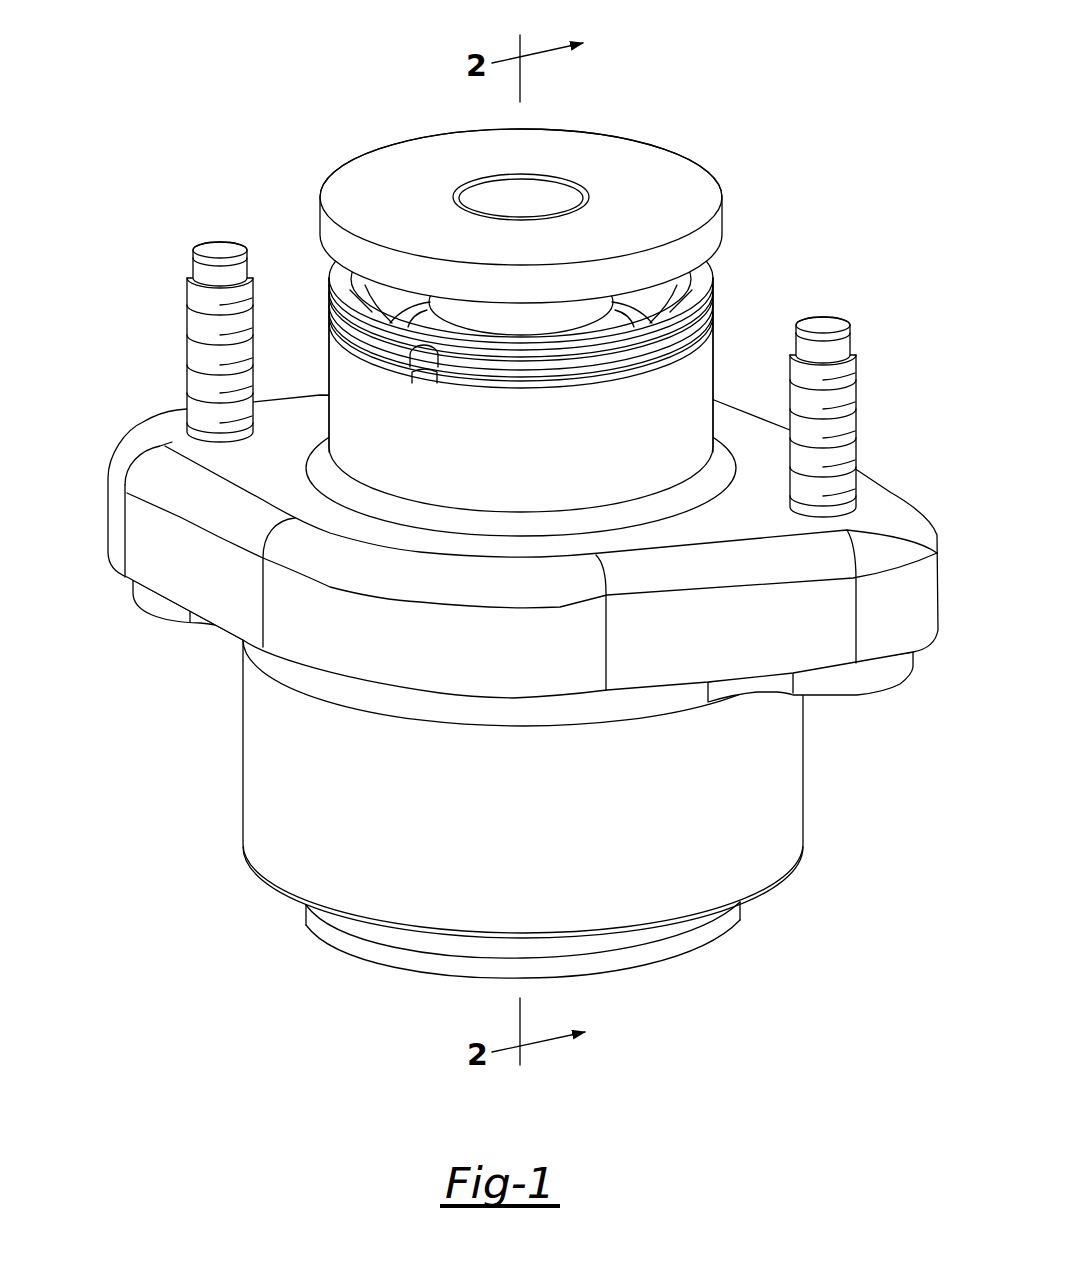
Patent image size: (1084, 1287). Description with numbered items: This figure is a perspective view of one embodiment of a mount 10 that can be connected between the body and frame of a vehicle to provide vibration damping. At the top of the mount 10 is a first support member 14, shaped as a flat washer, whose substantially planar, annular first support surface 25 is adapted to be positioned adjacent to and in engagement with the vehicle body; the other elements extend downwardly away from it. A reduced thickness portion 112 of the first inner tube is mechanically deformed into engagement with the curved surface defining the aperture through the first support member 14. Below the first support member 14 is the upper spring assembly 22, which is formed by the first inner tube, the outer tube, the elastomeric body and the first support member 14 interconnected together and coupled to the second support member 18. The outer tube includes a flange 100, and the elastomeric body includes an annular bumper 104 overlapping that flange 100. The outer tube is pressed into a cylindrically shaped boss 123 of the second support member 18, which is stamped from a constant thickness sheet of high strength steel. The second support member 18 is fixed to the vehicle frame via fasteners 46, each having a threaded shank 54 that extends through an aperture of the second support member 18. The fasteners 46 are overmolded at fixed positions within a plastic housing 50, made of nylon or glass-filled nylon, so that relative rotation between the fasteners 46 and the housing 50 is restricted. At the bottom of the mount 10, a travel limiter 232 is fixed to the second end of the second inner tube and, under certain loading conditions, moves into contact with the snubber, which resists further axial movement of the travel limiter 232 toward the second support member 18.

The mount 10 is at (788, 68).
The first support member 14 is at (591, 199).
The first support surface 25 is at (593, 143).
The reduced thickness portion 112 is at (456, 195).
The upper spring assembly 22 is at (550, 272).
The annular bumper 104 is at (335, 296).
The boss 123 is at (337, 373).
The flange 100 is at (548, 347).
The second support member 18 is at (104, 490).
The fasteners 46 is at (513, 352).
The threaded shank 54 is at (187, 330).
The plastic housing 50 is at (153, 600).
The travel limiter 232 is at (335, 931).